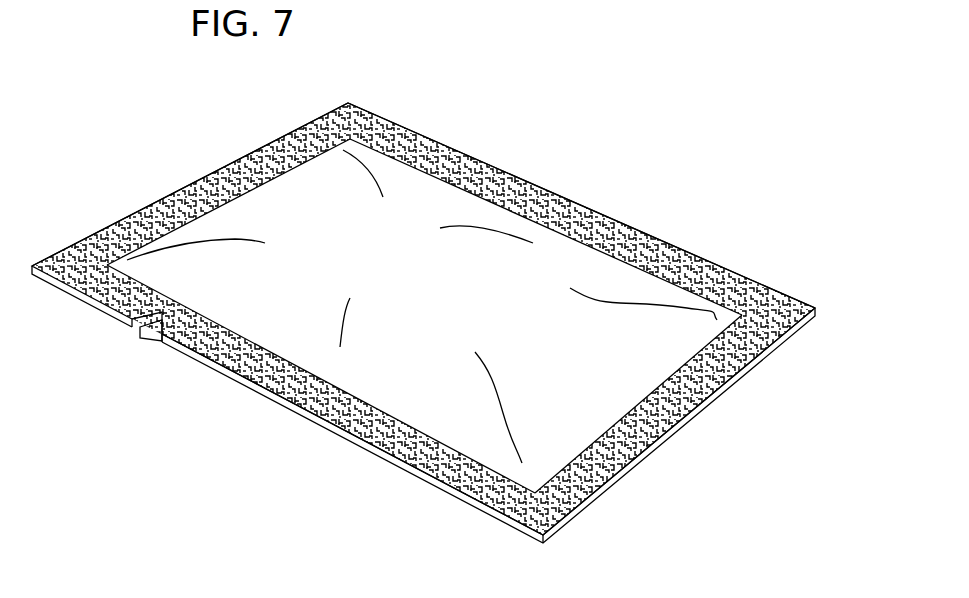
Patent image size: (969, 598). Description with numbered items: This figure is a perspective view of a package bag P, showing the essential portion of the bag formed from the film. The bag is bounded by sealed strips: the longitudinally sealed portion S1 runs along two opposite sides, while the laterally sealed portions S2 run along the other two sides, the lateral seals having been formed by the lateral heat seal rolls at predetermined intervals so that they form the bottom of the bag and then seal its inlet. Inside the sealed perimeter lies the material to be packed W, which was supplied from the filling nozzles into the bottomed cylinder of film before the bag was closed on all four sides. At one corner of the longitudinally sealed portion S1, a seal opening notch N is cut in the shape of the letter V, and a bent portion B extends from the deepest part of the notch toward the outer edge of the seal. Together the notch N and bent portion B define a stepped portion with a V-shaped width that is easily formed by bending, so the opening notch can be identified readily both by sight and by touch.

The package bag P is at (566, 159).
The longitudinally sealed portion S1 is at (597, 222).
The laterally sealed portion S2 is at (227, 177).
The material to be packed W is at (405, 208).
The seal opening notch N is at (138, 327).
The bent portion B is at (151, 341).